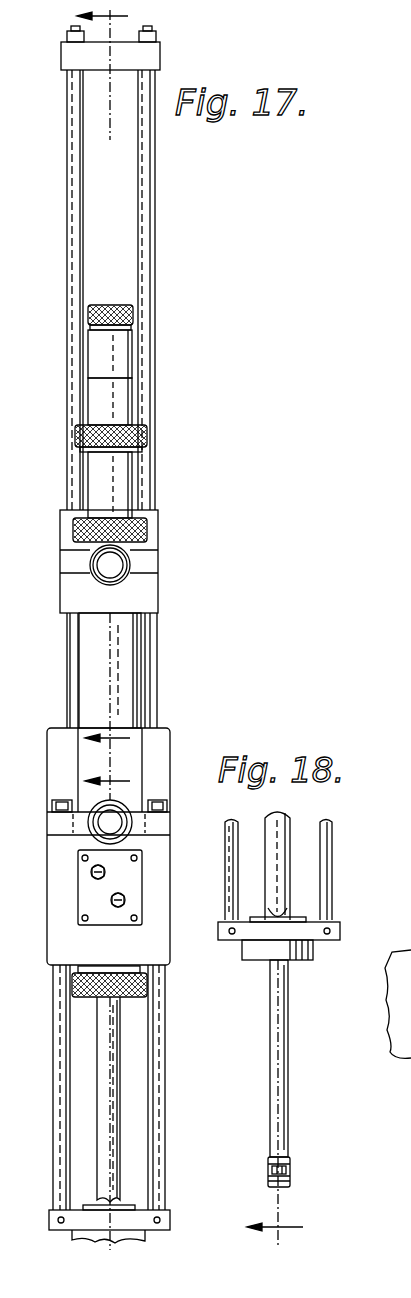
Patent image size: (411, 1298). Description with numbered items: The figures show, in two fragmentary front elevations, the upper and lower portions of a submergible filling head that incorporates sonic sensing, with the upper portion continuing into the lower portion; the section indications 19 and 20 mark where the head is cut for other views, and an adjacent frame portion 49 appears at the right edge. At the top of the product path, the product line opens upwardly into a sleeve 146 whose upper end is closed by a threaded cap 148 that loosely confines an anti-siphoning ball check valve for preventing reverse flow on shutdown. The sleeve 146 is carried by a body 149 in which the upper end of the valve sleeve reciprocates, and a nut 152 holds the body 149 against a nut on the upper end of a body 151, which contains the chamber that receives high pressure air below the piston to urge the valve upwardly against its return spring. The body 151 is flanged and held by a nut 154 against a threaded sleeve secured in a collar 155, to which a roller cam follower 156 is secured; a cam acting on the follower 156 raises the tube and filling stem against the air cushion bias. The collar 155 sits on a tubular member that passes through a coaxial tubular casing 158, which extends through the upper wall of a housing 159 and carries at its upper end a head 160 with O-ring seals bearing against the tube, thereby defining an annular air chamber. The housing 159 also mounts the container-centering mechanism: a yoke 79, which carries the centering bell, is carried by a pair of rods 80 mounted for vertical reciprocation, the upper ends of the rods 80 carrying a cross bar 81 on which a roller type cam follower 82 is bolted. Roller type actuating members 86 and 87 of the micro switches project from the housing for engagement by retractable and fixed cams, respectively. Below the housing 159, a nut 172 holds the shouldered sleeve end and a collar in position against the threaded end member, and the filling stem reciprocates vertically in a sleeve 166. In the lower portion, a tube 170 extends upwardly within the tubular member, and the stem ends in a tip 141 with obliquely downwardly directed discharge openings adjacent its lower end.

In FIG. 17, the section line 19- 19 is at (117, 385).
In FIG. 17, the section line 20- 20 is at (114, 773).
In FIG. 18, the section line 20- 20 is at (290, 1229).
In FIG. 18, the frame member 49 is at (392, 981).
In FIG. 17, the yoke 79 is at (170, 1232).
In FIG. 18, the yoke 79 is at (313, 948).
In FIG. 17, the rods 80 is at (60, 1097).
In FIG. 18, the rods 80 is at (237, 810).
In FIG. 17, the cross bar 81 is at (55, 822).
In FIG. 17, the roller type cam follower 82 is at (130, 838).
In FIG. 17, the actuating member 86 is at (91, 871).
In FIG. 17, the actuating member 87 is at (111, 900).
In FIG. 17, the sleeve 146 is at (131, 358).
In FIG. 17, the cap 148 is at (133, 318).
In FIG. 17, the body 149 is at (128, 405).
In FIG. 17, the body 151 is at (130, 478).
In FIG. 17, the nut 152 is at (147, 437).
In FIG. 17, the nut 154 is at (147, 530).
In FIG. 17, the collar 155 is at (158, 575).
In FIG. 17, the roller cam follower 156 is at (130, 565).
In FIG. 17, the tubular casing 158 is at (133, 662).
In FIG. 17, the housing 159 is at (170, 740).
In FIG. 17, the head 160 is at (158, 598).
In FIG. 17, the sleeve 166 is at (118, 1038).
In FIG. 18, the sleeve 166 is at (290, 850).
In FIG. 18, the tube 170 is at (288, 1078).
In FIG. 18, the tip 141 is at (288, 1187).
In FIG. 17, the nut 172 is at (147, 987).